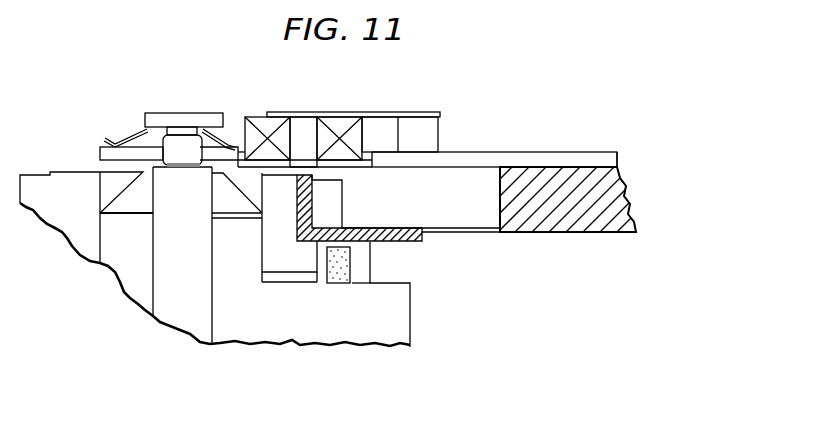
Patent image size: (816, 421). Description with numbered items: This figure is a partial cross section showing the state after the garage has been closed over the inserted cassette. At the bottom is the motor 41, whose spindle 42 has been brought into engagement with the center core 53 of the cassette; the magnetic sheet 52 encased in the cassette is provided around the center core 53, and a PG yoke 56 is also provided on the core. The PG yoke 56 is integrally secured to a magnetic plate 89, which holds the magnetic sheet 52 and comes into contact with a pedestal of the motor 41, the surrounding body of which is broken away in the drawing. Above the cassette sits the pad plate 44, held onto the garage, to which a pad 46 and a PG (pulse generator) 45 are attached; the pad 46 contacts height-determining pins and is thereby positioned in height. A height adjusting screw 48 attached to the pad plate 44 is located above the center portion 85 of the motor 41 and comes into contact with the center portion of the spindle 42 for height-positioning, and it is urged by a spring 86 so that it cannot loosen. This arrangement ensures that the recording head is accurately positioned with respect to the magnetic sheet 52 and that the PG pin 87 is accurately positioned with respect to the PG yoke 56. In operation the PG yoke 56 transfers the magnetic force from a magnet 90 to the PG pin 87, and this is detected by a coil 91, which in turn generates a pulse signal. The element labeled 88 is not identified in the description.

The motor 41 is at (296, 393).
The spindle 42 is at (166, 166).
The pad plate 44 is at (427, 141).
The PG (pulse generator) 45 is at (352, 102).
The pad 46 is at (558, 192).
The height adjusting screw 48 is at (185, 113).
The magnetic sheet 52 is at (406, 225).
The center core 53 is at (64, 279).
The PG yoke 56 is at (357, 206).
The center portion of the motor 85 is at (208, 255).
The spring 86 is at (169, 112).
The PG pin 87 is at (353, 120).
The wall 88 is at (368, 331).
The magnetic plate 89 is at (393, 294).
The magnet 90 is at (338, 314).
The coil 91 is at (267, 119).